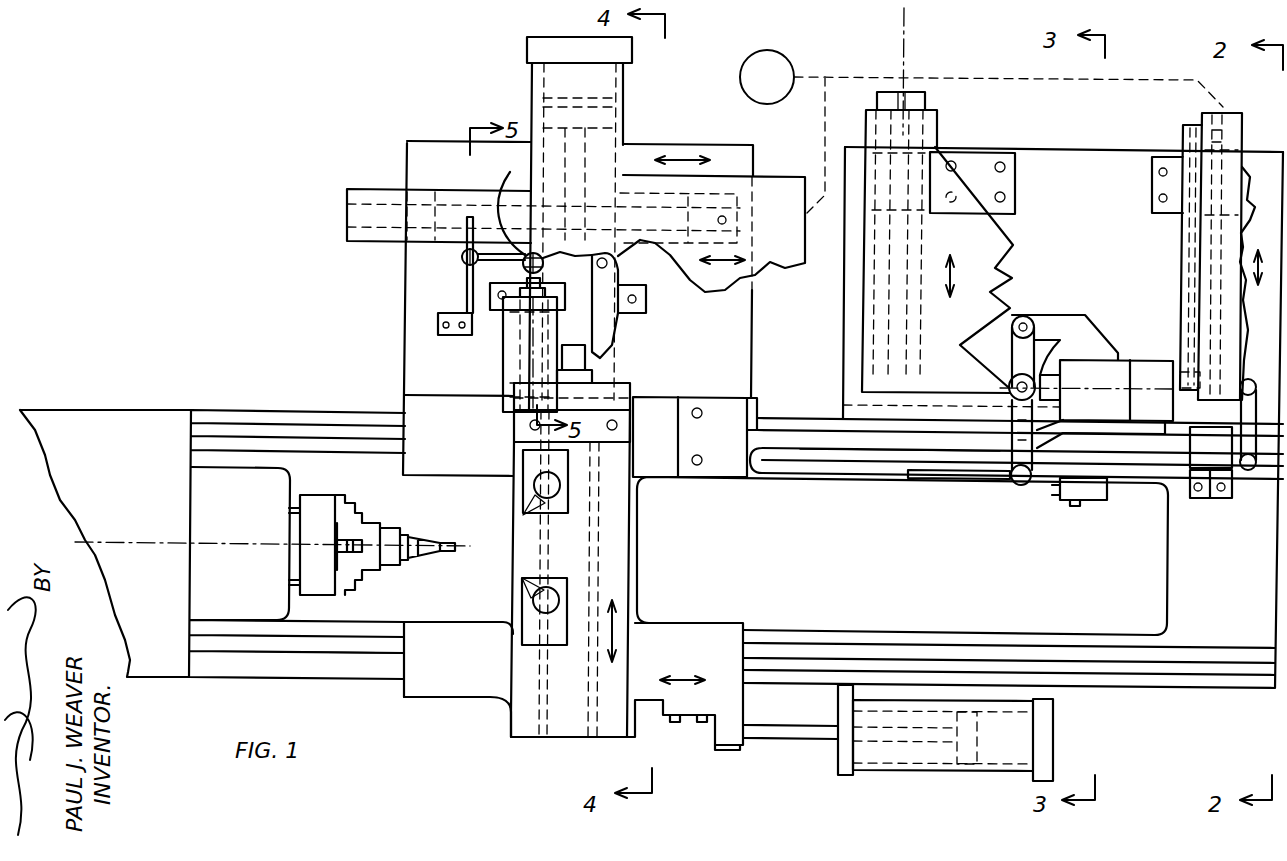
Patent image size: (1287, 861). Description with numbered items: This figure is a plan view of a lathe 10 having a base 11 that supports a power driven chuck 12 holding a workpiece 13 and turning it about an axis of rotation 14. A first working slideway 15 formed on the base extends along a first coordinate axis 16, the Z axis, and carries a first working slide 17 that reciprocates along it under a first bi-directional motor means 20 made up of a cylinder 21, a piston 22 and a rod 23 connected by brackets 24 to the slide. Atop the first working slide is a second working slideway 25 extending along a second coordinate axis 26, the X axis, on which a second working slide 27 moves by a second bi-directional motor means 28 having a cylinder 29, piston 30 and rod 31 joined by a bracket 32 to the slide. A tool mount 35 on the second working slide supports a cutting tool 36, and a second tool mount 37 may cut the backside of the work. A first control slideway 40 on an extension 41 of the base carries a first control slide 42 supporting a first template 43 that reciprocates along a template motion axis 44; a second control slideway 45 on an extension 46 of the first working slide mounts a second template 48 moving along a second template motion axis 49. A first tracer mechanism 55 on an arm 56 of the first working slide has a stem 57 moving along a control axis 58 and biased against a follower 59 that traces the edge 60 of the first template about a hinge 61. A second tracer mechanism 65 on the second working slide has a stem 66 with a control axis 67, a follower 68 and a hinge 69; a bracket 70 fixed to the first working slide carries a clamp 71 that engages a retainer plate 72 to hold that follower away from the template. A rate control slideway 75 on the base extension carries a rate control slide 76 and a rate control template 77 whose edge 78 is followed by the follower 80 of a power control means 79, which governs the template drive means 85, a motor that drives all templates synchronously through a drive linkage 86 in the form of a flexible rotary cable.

The lathe 10 is at (124, 383).
The base 11 is at (205, 410).
The power driven chuck 12 is at (326, 542).
The workpiece 13 is at (392, 522).
The axis of rotation 14 is at (100, 544).
The first working slideway 15 is at (375, 655).
The first coordinate axis 16 is at (700, 632).
The first working slide 17 is at (445, 697).
The first bi-directional motor means 20 is at (1072, 747).
The cylinder 21 is at (1003, 773).
The piston 22 is at (955, 760).
The rod 23 is at (800, 745).
The brackets 24 is at (735, 745).
The second working slideway 25 is at (548, 737).
The second coordinate axis 26 is at (625, 630).
The second working slide 27 is at (515, 737).
The second bi-directional motor means 28 is at (512, 35).
The cylinder 29 is at (545, 72).
The piston 30 is at (548, 102).
The rod 31 is at (588, 360).
The bracket 32 is at (592, 382).
The tool mount 35 is at (568, 605).
The cutting tool 36 is at (528, 590).
The second tool mount 37 is at (568, 492).
The first control slideway 40 is at (945, 152).
The extension 41 is at (1070, 148).
The first control slide 42 is at (925, 108).
The first template 43 is at (848, 290).
The template motion axis 44 is at (905, 50).
The second control slideway 45 is at (378, 190).
The extension 46 is at (636, 145).
The second template 48 is at (728, 178).
The second template motion axis 49 is at (675, 165).
The first tracer mechanism 55 is at (1115, 358).
The arm 56 is at (810, 445).
The stem 57 is at (1065, 320).
The control axis 58 is at (1130, 362).
The follower 59 is at (1010, 400).
The edge 60 is at (1015, 245).
The hinge 61 is at (1028, 322).
The second tracer mechanism 65 is at (503, 345).
The stem 66 is at (525, 270).
The control axis 67 is at (525, 365).
The follower 68 is at (520, 172).
The hinge 69 is at (615, 260).
The bracket 70 is at (438, 325).
The clamp 71 is at (462, 257).
The retainer plate 72 is at (470, 285).
The rate control slideway 75 is at (1185, 380).
The rate control slide 76 is at (1185, 130).
The rate control template 77 is at (1232, 113).
The edge 78 is at (1259, 283).
The power control means 79 is at (1222, 454).
The follower 80 is at (1250, 380).
The template drive means 85 is at (790, 58).
The drive linkage 86 is at (828, 77).